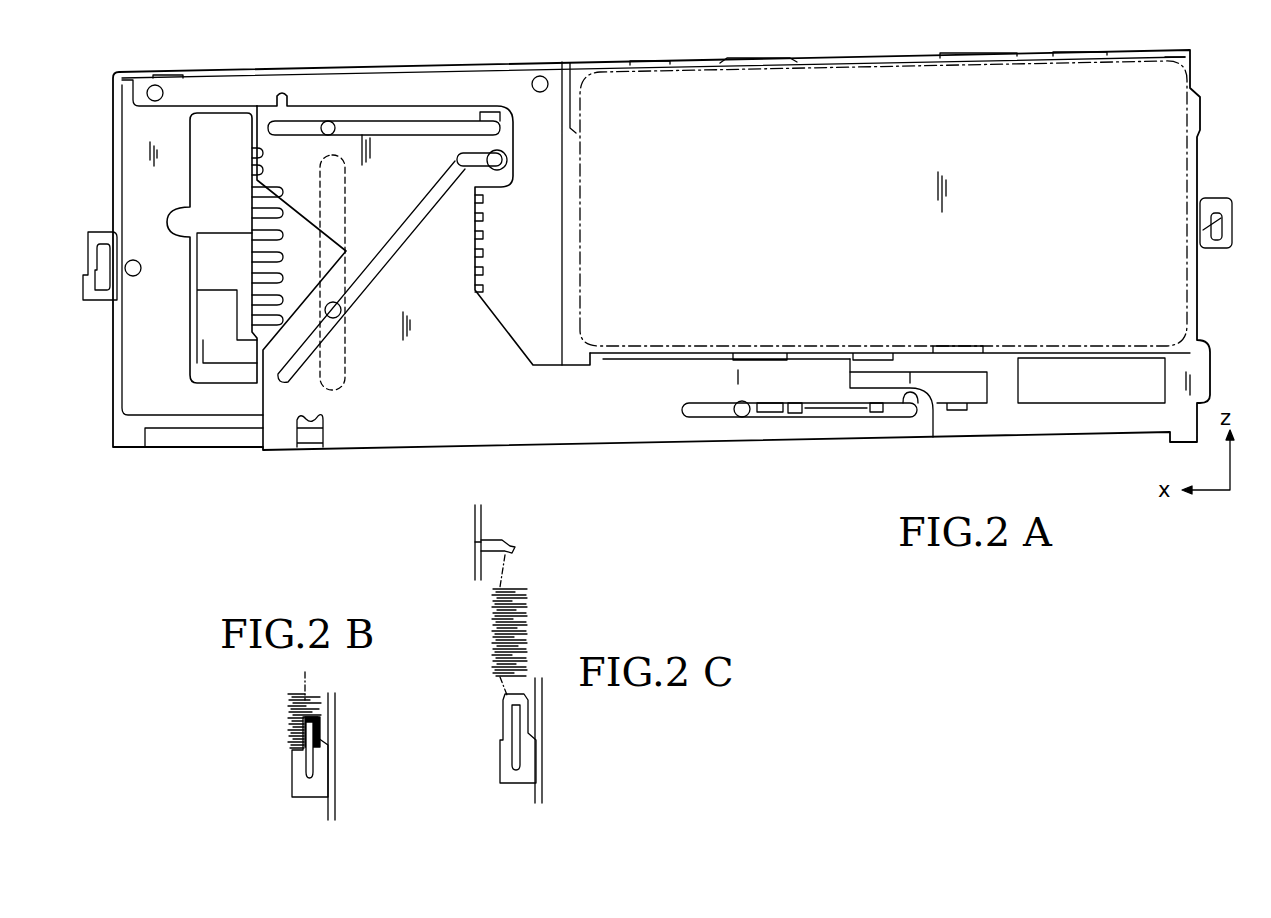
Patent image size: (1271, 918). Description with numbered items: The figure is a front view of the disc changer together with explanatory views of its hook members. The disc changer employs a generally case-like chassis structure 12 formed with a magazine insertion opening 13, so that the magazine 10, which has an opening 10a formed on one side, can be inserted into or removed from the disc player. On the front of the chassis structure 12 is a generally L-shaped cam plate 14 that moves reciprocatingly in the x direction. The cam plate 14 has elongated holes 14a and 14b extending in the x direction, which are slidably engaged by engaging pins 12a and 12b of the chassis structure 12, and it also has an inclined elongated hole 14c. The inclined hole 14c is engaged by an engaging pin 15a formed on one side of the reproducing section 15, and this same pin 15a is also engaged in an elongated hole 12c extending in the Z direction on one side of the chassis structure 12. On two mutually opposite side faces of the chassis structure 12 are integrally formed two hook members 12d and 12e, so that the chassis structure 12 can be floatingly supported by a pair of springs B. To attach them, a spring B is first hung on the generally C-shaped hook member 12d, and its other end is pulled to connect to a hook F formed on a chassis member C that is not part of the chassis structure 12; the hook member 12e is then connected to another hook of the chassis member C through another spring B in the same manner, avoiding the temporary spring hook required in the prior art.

In FIG. 2A, the magazine 10 is at (878, 207).
In FIG. 2A, the opening 10a is at (585, 218).
In FIG. 2A, the chassis structure 12 is at (555, 68).
In FIG. 2A, the engaging pin 12a is at (328, 121).
In FIG. 2A, the engaging pin 12b is at (741, 417).
In FIG. 2A, the elongated hole 12c is at (346, 225).
In FIG. 2A, the hook member 12d is at (103, 233).
In FIG. 2B, the hook member 12d is at (292, 775).
In FIG. 2C, the hook member 12d is at (500, 770).
In FIG. 2A, the hook member 12e is at (1215, 199).
In FIG. 2A, the magazine insertion opening 13 is at (1010, 102).
In FIG. 2A, the cam plate 14 is at (514, 393).
In FIG. 2A, the elongated hole 14a is at (383, 121).
In FIG. 2A, the elongated hole 14b is at (790, 418).
In FIG. 2A, the inclined elongated hole 14c is at (428, 196).
In FIG. 2A, the reproducing section 15 is at (207, 308).
In FIG. 2A, the engaging pin 15a is at (341, 313).
In FIG. 2B, the spring B is at (288, 716).
In FIG. 2C, the spring B is at (525, 618).
In FIG. 2C, the chassis member C is at (474, 542).
In FIG. 2C, the hook F is at (497, 540).